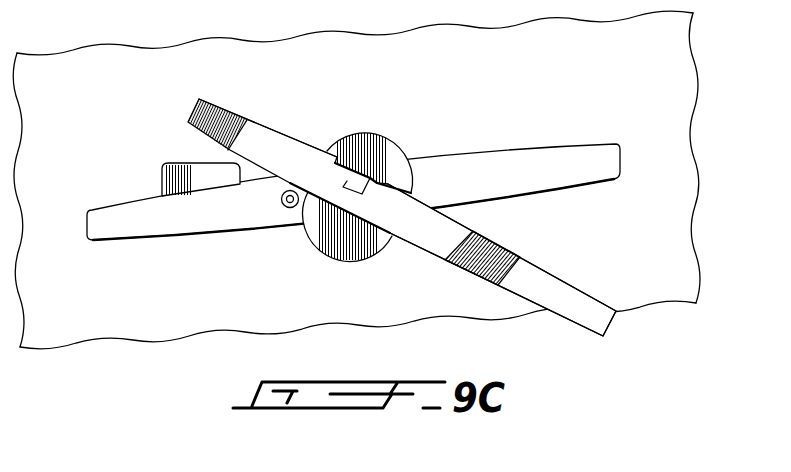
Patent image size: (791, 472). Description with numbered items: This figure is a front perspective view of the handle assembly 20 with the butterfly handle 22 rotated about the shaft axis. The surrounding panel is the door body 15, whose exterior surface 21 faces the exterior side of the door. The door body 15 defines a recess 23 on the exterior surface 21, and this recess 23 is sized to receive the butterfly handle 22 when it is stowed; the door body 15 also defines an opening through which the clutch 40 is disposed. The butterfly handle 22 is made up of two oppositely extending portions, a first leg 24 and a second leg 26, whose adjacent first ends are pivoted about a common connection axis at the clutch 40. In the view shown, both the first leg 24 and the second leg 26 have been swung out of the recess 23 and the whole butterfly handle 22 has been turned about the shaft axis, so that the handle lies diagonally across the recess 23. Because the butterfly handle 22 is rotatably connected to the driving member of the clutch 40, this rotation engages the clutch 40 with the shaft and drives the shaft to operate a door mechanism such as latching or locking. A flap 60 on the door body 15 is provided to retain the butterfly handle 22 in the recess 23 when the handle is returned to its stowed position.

The door body 15 is at (697, 170).
The handle assembly 20 is at (438, 123).
The exterior surface 21 is at (80, 112).
The butterfly handle 22 is at (553, 273).
The recess 23 is at (112, 206).
The first leg 24 is at (270, 125).
The second leg 26 is at (497, 240).
The clutch 40 is at (360, 133).
The flap 60 is at (182, 162).